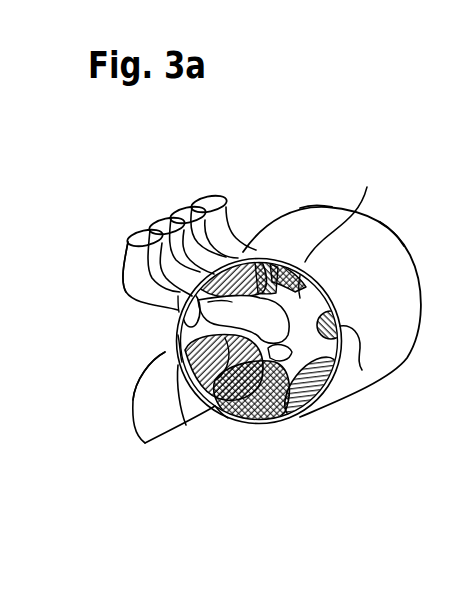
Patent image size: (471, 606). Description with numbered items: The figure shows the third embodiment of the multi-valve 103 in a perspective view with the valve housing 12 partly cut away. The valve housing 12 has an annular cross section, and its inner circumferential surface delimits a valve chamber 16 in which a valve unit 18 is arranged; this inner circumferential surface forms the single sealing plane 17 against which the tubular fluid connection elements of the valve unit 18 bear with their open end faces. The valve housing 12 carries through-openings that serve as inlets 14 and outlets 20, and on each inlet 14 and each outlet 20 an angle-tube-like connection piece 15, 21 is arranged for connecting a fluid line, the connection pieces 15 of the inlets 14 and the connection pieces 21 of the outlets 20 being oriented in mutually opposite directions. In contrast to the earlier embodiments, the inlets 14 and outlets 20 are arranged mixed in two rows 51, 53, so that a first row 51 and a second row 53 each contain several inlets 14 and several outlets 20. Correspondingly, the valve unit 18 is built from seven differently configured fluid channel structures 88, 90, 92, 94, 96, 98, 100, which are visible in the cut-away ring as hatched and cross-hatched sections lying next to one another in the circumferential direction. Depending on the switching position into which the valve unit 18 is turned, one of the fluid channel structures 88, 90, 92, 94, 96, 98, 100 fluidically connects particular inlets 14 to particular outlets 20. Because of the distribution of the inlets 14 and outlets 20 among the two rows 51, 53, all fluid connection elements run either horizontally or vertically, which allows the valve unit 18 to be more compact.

The valve housing 12 is at (374, 246).
The inlet 14 is at (163, 357).
The connection piece 15 is at (160, 420).
The valve chamber 16 is at (293, 307).
The sealing plane 17 is at (178, 335).
The valve unit 18 is at (330, 208).
The outlet 20 is at (218, 207).
The connection piece 21 is at (133, 252).
The first row 51 is at (189, 209).
The second row 53 is at (158, 434).
The first fluid channel structure 88 is at (252, 423).
The second fluid channel structure 90 is at (225, 418).
The third fluid channel structure 92 is at (177, 300).
The fourth fluid channel structure 94 is at (231, 231).
The fifth fluid channel structure 96 is at (342, 211).
The sixth fluid channel structure 98 is at (358, 358).
The seventh fluid channel structure 100 is at (314, 407).
The multi-valve 103 is at (408, 172).